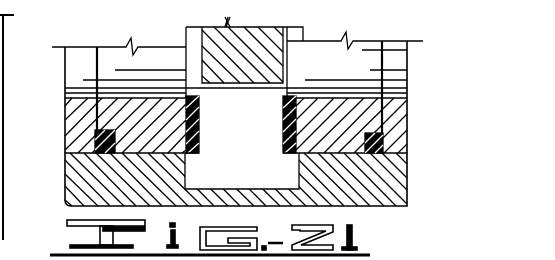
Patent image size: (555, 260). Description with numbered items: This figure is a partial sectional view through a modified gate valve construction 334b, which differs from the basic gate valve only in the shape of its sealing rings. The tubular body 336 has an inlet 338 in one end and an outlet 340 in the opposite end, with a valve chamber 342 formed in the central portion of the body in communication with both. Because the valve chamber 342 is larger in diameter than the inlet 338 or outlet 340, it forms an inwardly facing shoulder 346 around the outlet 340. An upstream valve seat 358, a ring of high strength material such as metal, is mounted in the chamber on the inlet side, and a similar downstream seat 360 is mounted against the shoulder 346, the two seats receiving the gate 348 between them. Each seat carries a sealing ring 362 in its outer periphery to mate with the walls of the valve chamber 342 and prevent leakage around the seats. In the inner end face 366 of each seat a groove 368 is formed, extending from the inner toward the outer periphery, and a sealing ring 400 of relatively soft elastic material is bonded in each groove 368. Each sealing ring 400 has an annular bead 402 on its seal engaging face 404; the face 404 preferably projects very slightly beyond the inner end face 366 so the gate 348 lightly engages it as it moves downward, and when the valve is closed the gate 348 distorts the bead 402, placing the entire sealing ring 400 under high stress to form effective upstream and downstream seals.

The gate valve construction 334b is at (119, 44).
The tubular body 336 is at (79, 186).
The inlet 338 is at (77, 63).
The outlet 340 is at (392, 63).
The valve chamber 342 is at (253, 185).
The inwardly facing shoulder 346 is at (3, 166).
The gate 348 is at (254, 60).
The upstream valve seat 358 is at (99, 105).
The downstream seat 360 is at (316, 96).
The sealing ring 362 is at (95, 143).
The inner end face 366 is at (283, 153).
The groove 368 is at (180, 110).
The sealing ring 400 is at (281, 135).
The annular bead 402 is at (278, 120).
The seal engaging face 404 is at (278, 102).